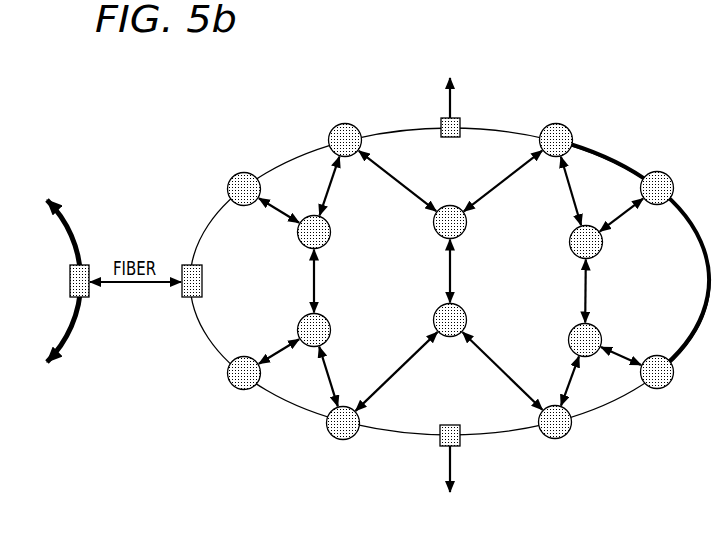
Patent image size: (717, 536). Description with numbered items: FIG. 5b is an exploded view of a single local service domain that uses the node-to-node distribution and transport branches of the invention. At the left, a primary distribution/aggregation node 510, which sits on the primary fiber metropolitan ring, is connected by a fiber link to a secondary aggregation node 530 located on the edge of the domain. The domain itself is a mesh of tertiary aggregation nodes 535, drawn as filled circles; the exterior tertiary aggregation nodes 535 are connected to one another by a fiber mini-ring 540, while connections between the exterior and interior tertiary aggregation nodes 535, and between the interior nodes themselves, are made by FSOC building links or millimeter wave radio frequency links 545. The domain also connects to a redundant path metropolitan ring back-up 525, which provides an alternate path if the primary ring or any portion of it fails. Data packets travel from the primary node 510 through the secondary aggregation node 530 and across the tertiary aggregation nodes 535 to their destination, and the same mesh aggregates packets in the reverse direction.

The primary distribution/aggregation node 510 is at (70, 279).
The redundant path metropolitan ring back-up 525 is at (448, 100).
The secondary aggregation node 530 is at (182, 300).
The tertiary aggregation node 535 is at (555, 438).
The fiber mini-ring 540 is at (617, 160).
The FSOC building links or millimeter wave radio frequency links 545 is at (505, 178).